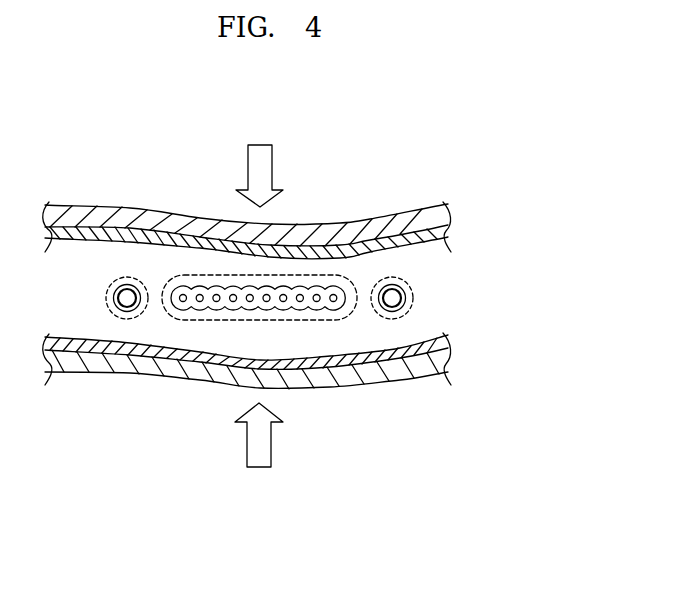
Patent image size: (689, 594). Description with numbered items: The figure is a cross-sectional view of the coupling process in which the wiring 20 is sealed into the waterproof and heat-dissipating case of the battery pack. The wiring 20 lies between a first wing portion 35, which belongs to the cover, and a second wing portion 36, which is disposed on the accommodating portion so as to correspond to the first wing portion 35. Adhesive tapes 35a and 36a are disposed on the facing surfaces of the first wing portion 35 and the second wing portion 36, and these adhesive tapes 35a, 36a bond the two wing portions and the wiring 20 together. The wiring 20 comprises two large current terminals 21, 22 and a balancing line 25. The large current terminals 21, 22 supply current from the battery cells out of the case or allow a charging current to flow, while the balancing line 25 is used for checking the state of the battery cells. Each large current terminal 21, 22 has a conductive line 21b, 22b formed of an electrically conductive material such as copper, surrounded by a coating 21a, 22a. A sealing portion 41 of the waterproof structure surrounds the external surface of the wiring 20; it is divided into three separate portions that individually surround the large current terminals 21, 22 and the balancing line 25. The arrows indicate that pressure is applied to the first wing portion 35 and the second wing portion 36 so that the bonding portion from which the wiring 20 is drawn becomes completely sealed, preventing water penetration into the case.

The wiring 20 is at (259, 342).
The large current terminal 21 is at (125, 399).
The coating 21a is at (135, 312).
The conductive line 21b is at (127, 303).
The large current terminal 22 is at (392, 399).
The coating 22a is at (380, 313).
The conductive line 22b is at (393, 305).
The balancing line 25 is at (217, 302).
The first wing portion 35 is at (446, 214).
The adhesive tape 35a is at (449, 232).
The second wing portion 36 is at (449, 362).
The adhesive tape 36a is at (447, 343).
The sealing portion 41 is at (190, 277).